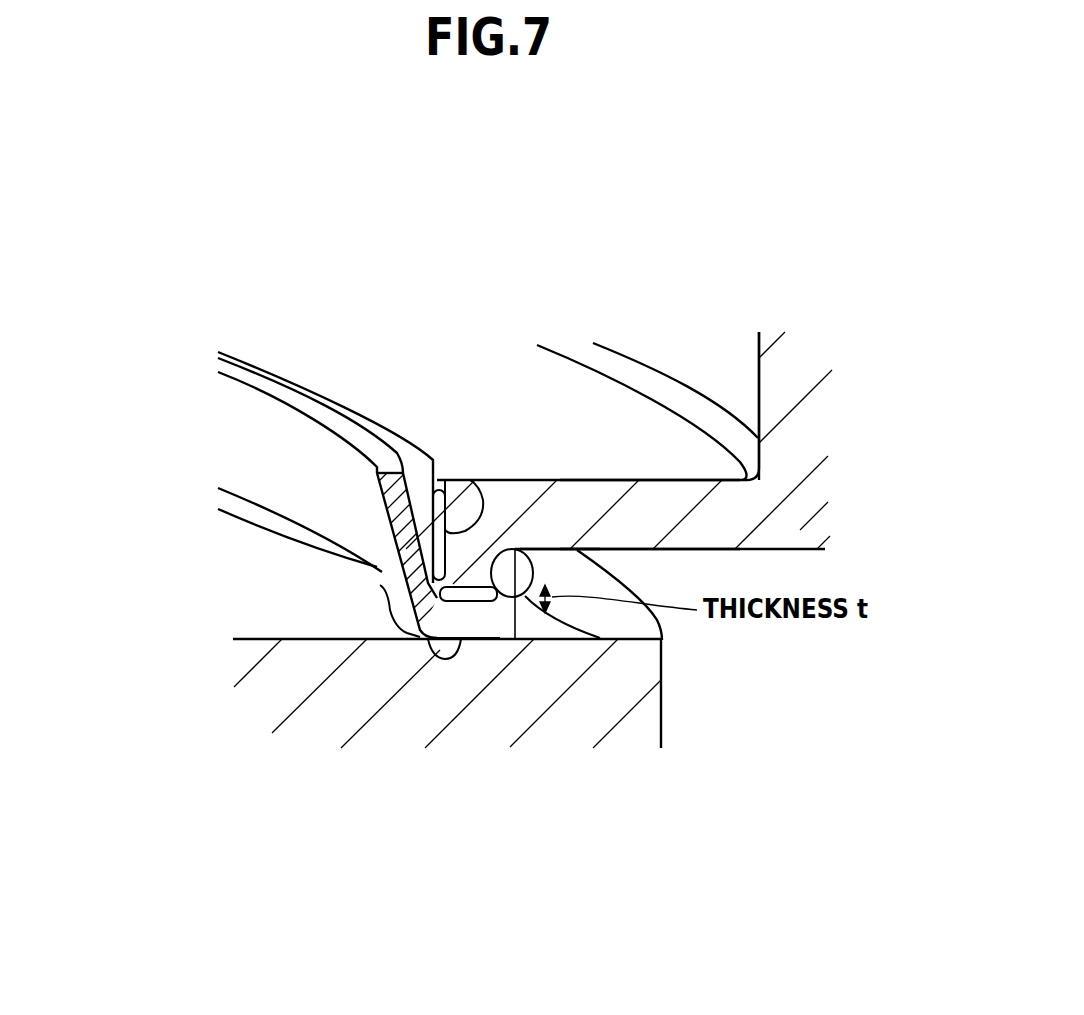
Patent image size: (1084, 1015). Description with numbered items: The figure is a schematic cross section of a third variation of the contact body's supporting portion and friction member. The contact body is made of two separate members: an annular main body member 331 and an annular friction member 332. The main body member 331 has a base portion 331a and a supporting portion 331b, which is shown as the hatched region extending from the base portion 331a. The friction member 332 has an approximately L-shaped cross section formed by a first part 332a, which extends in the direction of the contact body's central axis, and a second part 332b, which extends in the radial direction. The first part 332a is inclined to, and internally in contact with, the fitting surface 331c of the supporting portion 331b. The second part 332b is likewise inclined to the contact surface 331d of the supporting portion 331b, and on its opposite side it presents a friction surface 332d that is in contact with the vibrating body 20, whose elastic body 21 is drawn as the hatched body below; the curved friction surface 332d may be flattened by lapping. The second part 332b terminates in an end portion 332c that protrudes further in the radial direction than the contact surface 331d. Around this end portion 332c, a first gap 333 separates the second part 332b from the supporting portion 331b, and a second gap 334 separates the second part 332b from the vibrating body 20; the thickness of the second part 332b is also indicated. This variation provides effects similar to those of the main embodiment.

The main body member 331 is at (773, 137).
The base portion 331a is at (795, 382).
The supporting portion 331b is at (662, 502).
The fitting surface 331c is at (483, 493).
The contact surface 331d is at (470, 570).
The friction member 332 is at (303, 858).
The first part 332a is at (380, 585).
The second part 332b is at (462, 660).
The end portion 332c is at (525, 635).
The friction surface 332d is at (470, 632).
The first gap 333 is at (530, 553).
The second gap 334 is at (540, 627).
The elastic body 21 is at (447, 723).
The vibrating body 20 is at (371, 673).